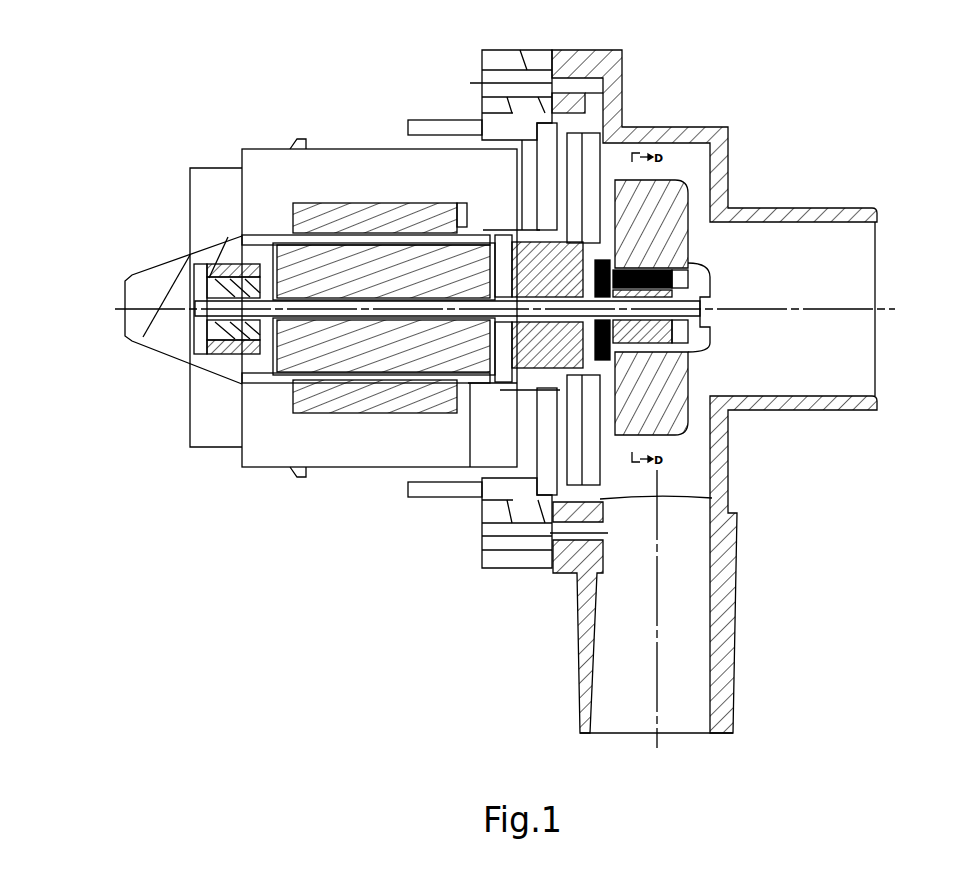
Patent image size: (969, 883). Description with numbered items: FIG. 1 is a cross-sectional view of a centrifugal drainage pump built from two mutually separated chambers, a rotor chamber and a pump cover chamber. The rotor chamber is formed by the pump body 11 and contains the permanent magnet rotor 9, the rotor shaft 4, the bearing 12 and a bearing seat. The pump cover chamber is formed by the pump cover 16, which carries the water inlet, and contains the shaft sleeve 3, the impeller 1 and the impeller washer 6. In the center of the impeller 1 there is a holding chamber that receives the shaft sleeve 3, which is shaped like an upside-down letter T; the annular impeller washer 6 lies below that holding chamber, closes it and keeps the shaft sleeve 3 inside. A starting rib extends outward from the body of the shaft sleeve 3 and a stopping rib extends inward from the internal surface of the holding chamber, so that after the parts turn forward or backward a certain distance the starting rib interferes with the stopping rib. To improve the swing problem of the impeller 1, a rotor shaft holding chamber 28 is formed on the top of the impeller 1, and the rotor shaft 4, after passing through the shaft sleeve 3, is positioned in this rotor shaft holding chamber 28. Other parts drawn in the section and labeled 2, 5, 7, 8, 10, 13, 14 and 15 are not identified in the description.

The impeller 1 is at (673, 383).
The nut 2 is at (678, 268).
The shaft sleeve 3 is at (697, 283).
The rotor shaft 4 is at (480, 315).
The impeller hub 5 is at (643, 255).
The impeller washer 6 is at (727, 161).
The bearing cover 7 is at (523, 222).
The rear bearing 8 is at (513, 258).
The permanent magnet rotor 9 is at (250, 242).
The spacer sleeve 10 is at (188, 274).
The pump body 11 is at (147, 340).
The bearing 12 is at (196, 344).
The front bearing 13 is at (220, 340).
The motor housing 14 is at (382, 352).
The stator winding 15 is at (380, 369).
The pump cover 16 is at (597, 614).
The rotor shaft holding chamber 28 is at (710, 330).